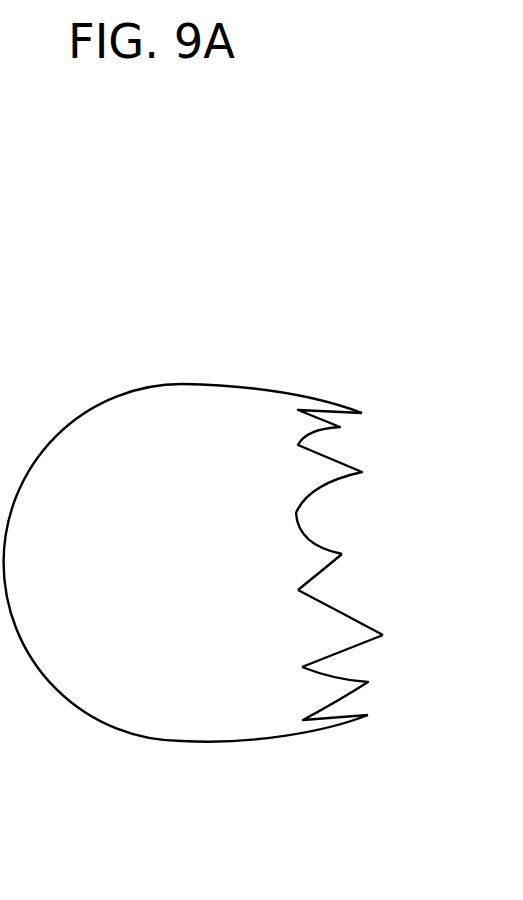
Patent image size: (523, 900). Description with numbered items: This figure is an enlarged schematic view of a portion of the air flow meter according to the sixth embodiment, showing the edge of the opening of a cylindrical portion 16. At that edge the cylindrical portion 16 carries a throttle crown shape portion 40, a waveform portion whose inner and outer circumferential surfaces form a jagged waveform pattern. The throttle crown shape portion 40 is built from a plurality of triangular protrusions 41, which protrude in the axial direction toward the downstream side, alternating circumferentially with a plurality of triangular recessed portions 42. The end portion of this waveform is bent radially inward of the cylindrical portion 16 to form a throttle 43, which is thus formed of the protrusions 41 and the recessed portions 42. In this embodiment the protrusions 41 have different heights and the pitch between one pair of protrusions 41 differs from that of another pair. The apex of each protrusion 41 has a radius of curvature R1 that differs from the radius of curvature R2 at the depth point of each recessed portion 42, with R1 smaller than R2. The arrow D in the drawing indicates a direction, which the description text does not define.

The cylindrical portion 16 is at (128, 735).
The throttle crown shape portion 40 is at (328, 400).
The protrusion 41 is at (383, 636).
The recessed portion 42 is at (312, 588).
The throttle 43 is at (442, 582).
The radius of curvature of the apex of each protrusion R1 is at (343, 548).
The radius of curvature of the depth point of each recessed portion R2 is at (298, 593).
The direction D is at (388, 554).